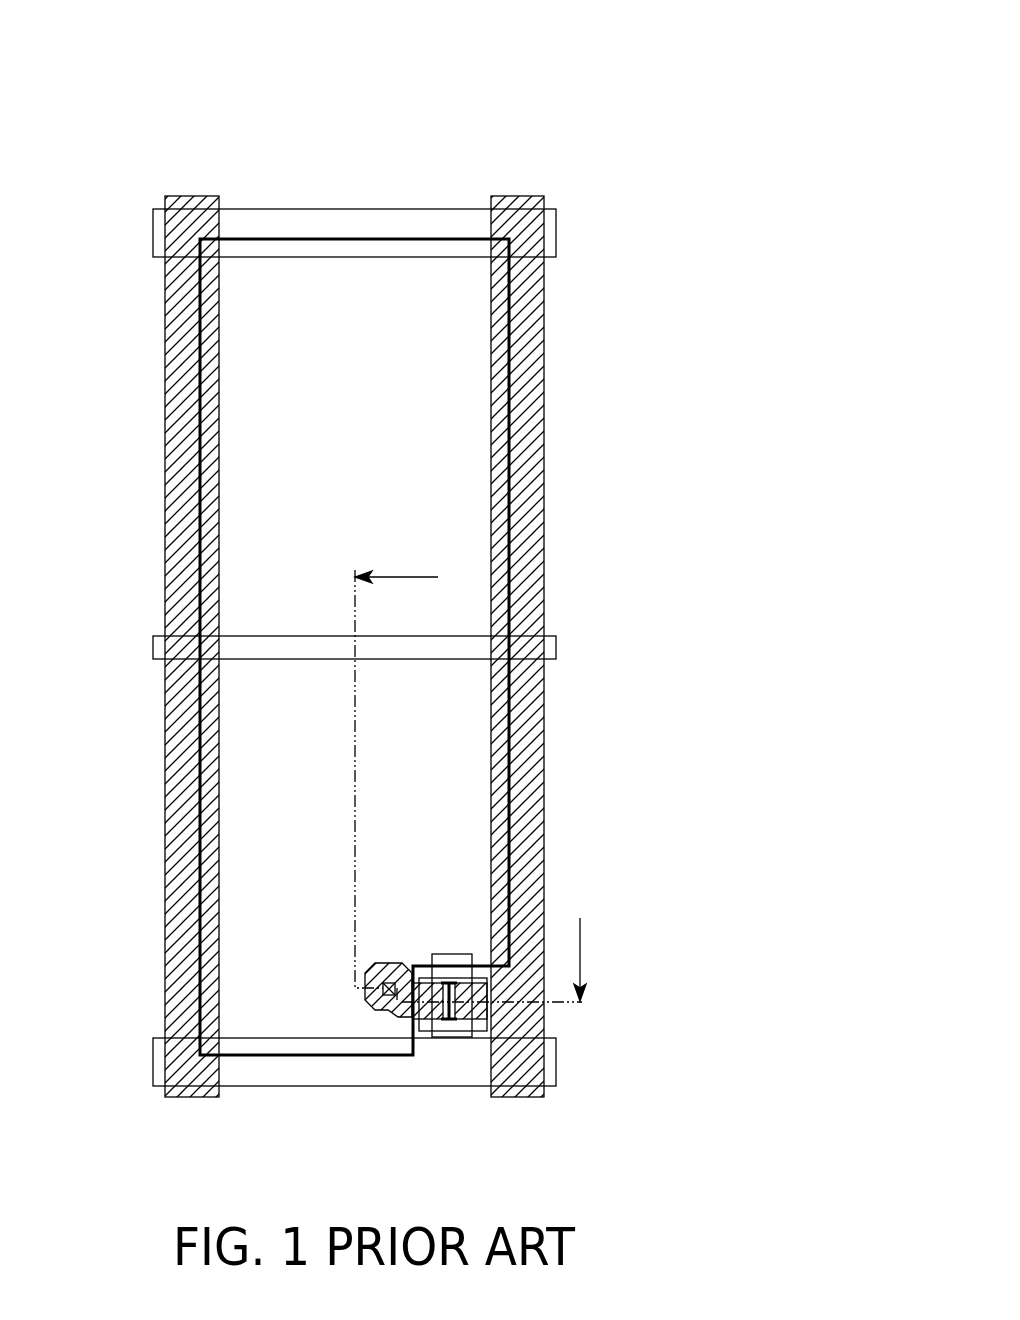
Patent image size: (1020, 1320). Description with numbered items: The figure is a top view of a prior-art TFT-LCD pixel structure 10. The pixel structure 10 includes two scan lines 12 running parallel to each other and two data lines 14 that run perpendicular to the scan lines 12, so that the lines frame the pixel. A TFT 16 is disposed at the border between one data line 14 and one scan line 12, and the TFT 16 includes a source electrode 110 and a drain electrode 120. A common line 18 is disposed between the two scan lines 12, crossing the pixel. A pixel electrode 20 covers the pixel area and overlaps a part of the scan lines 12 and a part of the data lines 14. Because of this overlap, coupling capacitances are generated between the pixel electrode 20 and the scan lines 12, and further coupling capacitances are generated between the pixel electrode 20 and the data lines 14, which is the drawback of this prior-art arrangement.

The pixel structure 10 is at (559, 117).
The scan line 12 is at (333, 1075).
The data line 14 is at (181, 772).
The TFT 16 is at (451, 1038).
The common line 18 is at (556, 645).
The pixel electrode 20 is at (458, 330).
The source electrode 110 is at (389, 970).
The drain electrode 120 is at (480, 1012).